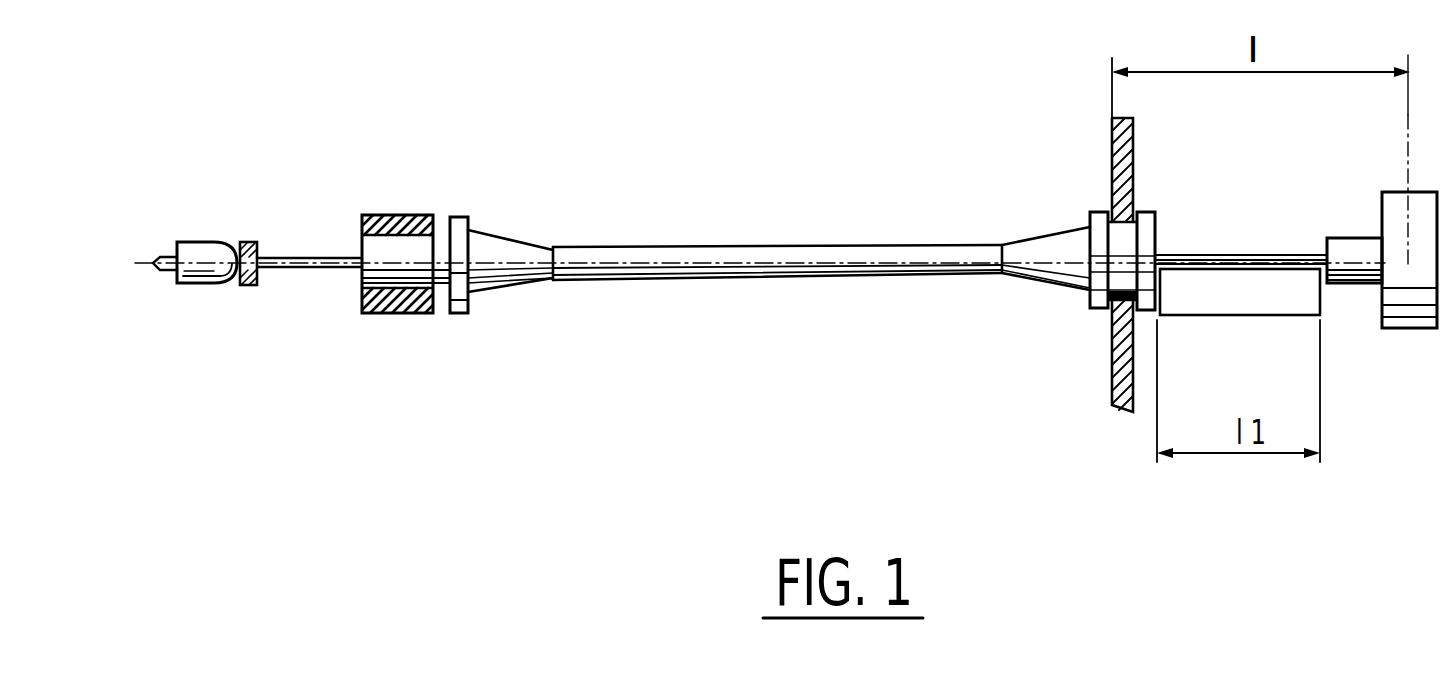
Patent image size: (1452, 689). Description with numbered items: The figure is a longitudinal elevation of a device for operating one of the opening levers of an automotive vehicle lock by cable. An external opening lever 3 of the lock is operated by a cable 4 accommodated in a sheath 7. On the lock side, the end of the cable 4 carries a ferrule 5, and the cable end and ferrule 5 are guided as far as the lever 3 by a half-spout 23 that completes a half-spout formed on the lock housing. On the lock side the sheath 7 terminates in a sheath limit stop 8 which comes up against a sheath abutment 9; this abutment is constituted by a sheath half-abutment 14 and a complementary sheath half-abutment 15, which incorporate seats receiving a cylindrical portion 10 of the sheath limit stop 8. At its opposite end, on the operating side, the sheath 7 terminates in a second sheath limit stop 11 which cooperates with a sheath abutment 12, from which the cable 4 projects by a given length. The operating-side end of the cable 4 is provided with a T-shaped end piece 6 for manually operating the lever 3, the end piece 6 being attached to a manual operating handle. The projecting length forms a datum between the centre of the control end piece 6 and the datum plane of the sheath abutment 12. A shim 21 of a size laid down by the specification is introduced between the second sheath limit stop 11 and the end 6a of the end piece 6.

The external opening lever 3 is at (249, 242).
The cable 4 is at (301, 272).
The ferrule 5 is at (211, 313).
The half-spout 23 is at (193, 270).
The T-shaped end piece 6 is at (1416, 322).
The end of the end piece 6a is at (1353, 245).
The sheath 7 is at (792, 263).
The sheath limit stop 8 is at (488, 223).
The sheath abutment 9 is at (406, 273).
The cylindrical portion 10 is at (441, 248).
The second sheath limit stop 11 is at (1072, 300).
The sheath abutment 12 is at (1122, 376).
The sheath half-abutment 14 is at (393, 215).
The complementary sheath half-abutment 15 is at (412, 315).
The shim 21 is at (1235, 300).